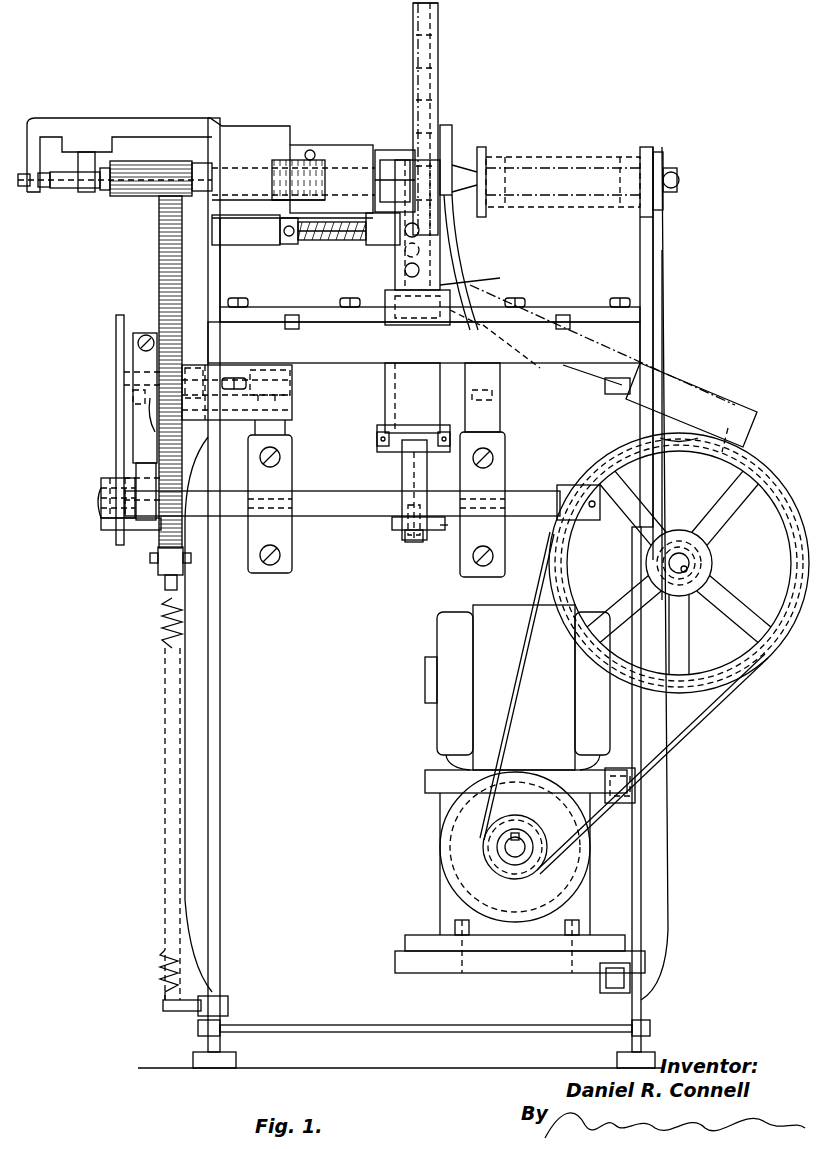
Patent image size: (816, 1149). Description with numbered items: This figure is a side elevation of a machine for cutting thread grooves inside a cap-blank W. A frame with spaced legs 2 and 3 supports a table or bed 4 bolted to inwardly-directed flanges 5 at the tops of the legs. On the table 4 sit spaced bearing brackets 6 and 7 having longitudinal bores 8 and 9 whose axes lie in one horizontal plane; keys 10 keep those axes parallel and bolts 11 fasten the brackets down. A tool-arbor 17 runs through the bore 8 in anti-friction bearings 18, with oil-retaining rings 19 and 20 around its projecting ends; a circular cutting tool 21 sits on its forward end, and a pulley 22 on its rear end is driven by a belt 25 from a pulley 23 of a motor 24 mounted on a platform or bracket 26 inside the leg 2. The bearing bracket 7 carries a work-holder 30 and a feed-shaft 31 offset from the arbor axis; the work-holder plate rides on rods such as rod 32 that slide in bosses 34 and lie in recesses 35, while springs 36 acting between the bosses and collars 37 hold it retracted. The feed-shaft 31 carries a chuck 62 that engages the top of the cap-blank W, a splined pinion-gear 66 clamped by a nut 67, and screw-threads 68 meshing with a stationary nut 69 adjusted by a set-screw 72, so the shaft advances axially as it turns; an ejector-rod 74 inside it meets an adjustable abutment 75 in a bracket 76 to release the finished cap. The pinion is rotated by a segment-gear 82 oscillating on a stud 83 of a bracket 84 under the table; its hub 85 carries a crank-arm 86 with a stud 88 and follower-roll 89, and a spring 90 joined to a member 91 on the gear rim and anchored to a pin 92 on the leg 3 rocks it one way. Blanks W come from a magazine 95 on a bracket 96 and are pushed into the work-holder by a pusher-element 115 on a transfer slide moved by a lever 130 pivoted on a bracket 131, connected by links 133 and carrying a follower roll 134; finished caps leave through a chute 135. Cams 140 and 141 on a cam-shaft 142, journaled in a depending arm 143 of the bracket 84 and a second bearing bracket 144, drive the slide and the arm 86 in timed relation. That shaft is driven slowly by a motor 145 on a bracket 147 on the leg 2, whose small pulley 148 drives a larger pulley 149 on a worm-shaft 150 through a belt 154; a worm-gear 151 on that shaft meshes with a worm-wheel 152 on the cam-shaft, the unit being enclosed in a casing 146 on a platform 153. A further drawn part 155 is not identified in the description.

The leg 2 is at (641, 872).
The leg 3 is at (220, 695).
The table or bed 4 is at (362, 363).
The inwardly-directed flanges 5 is at (280, 382).
The bearing bracket 6 is at (630, 253).
The bearing bracket 7 is at (222, 283).
The longitudinal bore 8 is at (560, 207).
The longitudinal bore 9 is at (345, 160).
The keys 10 is at (292, 329).
The bolts 11 is at (248, 300).
The tool-arbor 17 is at (575, 157).
The anti-friction bearings 18 is at (505, 157).
The oil-retaining ring 19 is at (481, 147).
The oil-retaining ring 20 is at (646, 147).
The circular cutting tool 21 is at (458, 215).
The pulley 22 is at (676, 160).
The pulley 23 is at (668, 758).
The motor 24 is at (497, 605).
The belt 25 is at (658, 302).
The platform or bracket 26 is at (435, 793).
The work-holder 30 is at (446, 125).
The feed-shaft 31 is at (200, 192).
The rod 32 is at (345, 244).
The bosses 34 is at (385, 246).
The recesses 35 is at (232, 248).
The springs 36 is at (310, 244).
The collars 37 is at (290, 244).
The chuck 62 is at (390, 150).
The splined pinion-gear 66 is at (150, 196).
The nut 67 is at (108, 192).
The screw-threads 68 is at (275, 162).
The stationary nut 69 is at (285, 203).
The set-screw 72 is at (310, 150).
The ejector-rod 74 is at (48, 188).
The adjustable abutment 75 is at (30, 188).
The bracket 76 is at (143, 128).
The segment-gear 82 is at (160, 263).
The stud 83 is at (138, 412).
The bracket 84 is at (292, 417).
The hub 85 is at (135, 362).
The crank-arm 86 is at (133, 442).
The stud 88 is at (110, 530).
The follower-roll 89 is at (106, 488).
The spring 90 is at (162, 648).
The member 91 is at (160, 580).
The pin 92 is at (178, 1012).
The magazine 95 is at (438, 32).
The bracket 96 is at (478, 294).
The pusher-element 115 is at (395, 262).
The lever 130 is at (400, 462).
The bracket 131 is at (385, 410).
The links 133 is at (398, 325).
The follower roll 134 is at (414, 542).
The chute 135 is at (700, 385).
The cam 140 is at (402, 483).
The cam 141 is at (116, 383).
The cam-shaft 142 is at (345, 517).
The depending arm 143 is at (292, 436).
The second bearing bracket 144 is at (490, 430).
The motor 145 is at (440, 893).
The casing 146 is at (730, 480).
The bracket 147 is at (590, 955).
The small pulley 148 is at (512, 880).
The larger pulley 149 is at (755, 670).
The worm-shaft 150 is at (684, 556).
The worm-gear 151 is at (646, 563).
The worm-wheel 152 is at (701, 427).
The platform 153 is at (680, 620).
The belt 154 is at (528, 672).
The link 155 is at (445, 530).
The cap-blank W is at (432, 72).